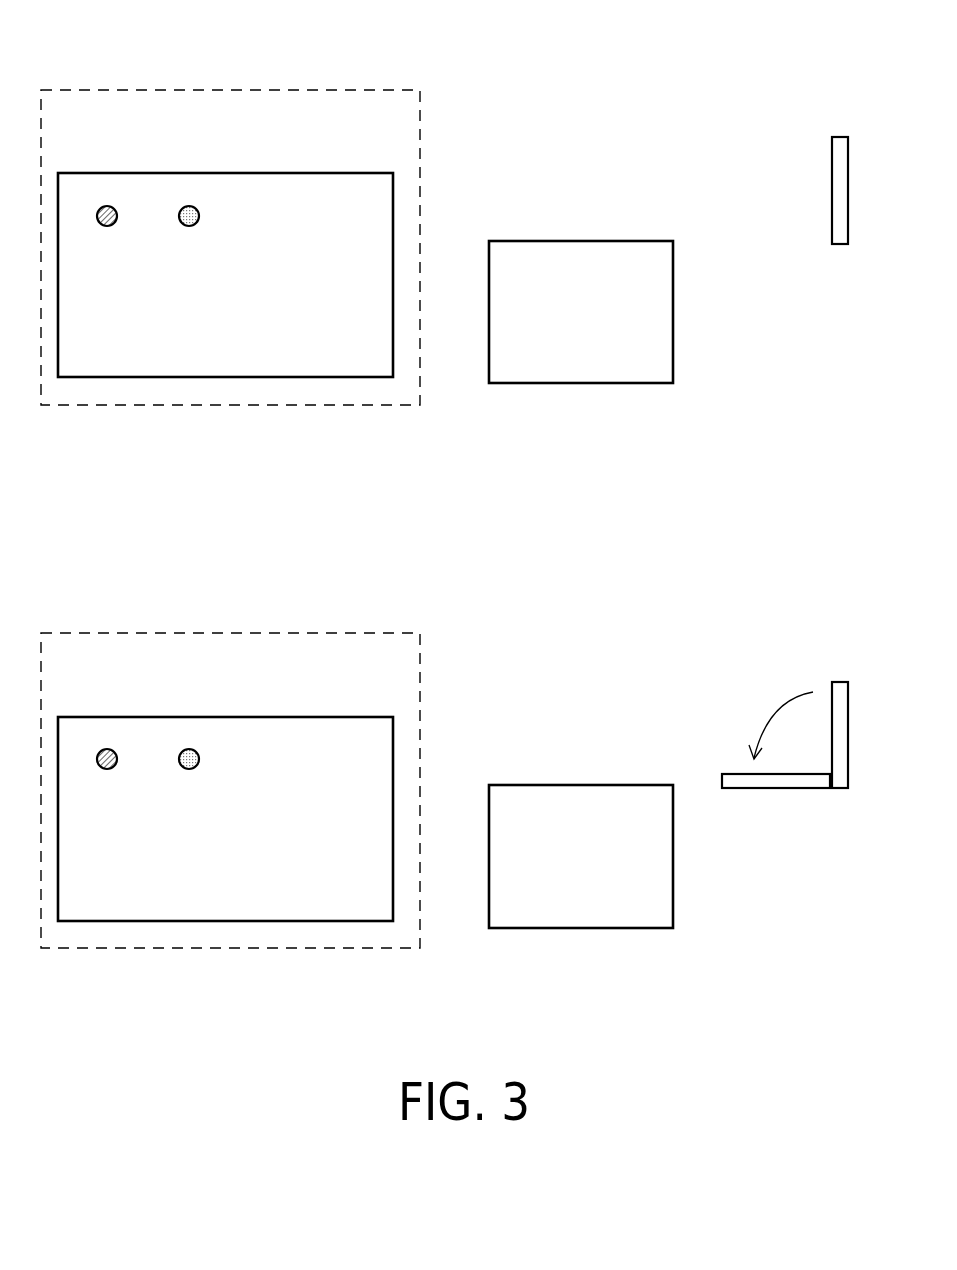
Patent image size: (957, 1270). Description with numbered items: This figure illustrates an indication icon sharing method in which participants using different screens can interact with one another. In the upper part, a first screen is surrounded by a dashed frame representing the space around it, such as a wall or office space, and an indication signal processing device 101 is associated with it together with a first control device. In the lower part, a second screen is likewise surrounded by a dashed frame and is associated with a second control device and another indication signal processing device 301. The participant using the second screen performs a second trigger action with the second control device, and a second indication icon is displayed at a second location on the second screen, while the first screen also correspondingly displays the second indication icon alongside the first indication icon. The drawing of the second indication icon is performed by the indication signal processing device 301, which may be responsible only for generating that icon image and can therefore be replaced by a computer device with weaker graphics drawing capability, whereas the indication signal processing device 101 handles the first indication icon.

The indication signal processing device 101 is at (590, 384).
The indication signal processing device 301 is at (590, 929).